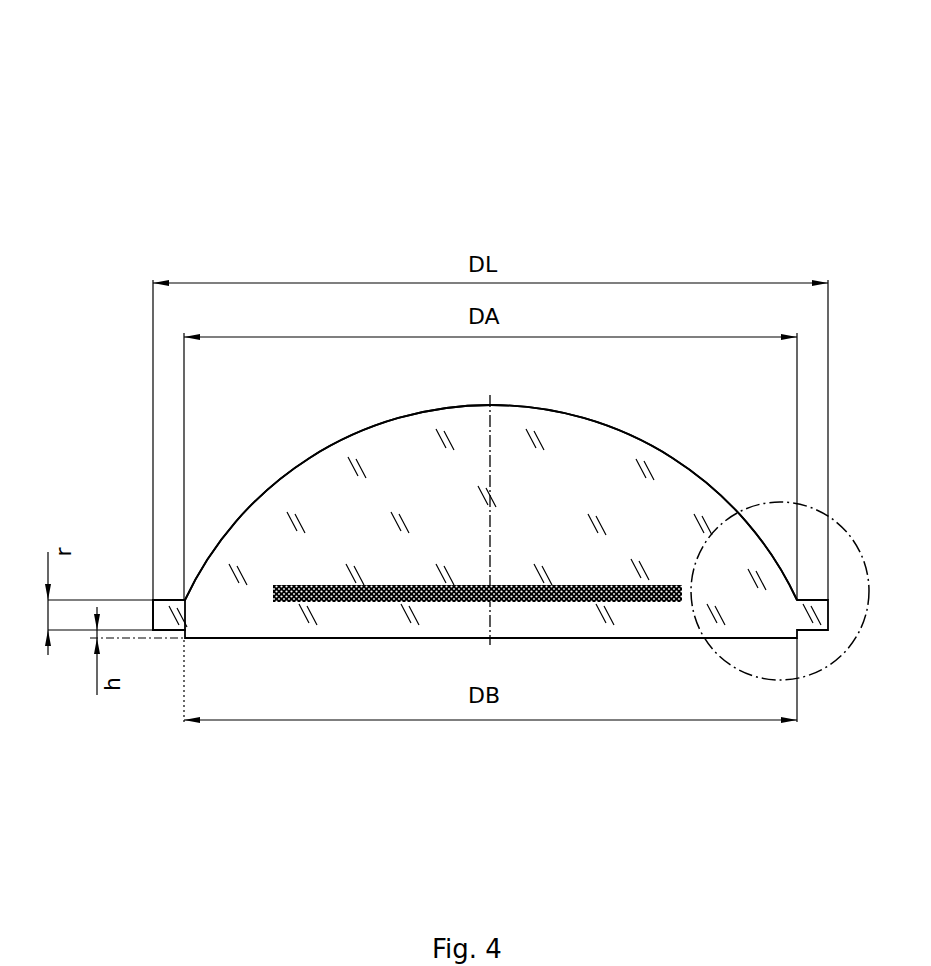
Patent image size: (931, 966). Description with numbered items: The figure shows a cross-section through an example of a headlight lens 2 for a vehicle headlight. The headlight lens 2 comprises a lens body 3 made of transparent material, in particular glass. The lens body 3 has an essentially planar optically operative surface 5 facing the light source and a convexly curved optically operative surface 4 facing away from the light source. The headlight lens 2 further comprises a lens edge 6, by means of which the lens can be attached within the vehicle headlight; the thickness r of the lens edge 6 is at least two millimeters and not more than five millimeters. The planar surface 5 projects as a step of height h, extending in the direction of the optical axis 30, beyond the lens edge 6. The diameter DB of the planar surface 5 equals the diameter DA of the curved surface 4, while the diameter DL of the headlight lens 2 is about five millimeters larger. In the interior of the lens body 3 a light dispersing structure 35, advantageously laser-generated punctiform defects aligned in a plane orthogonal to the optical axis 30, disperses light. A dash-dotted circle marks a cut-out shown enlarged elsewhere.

The headlight lens 2 is at (731, 150).
The lens body 3 is at (262, 553).
The convexly curved optically operative surface 4 is at (297, 467).
The optical axis 30 is at (490, 535).
The lens edge 6 is at (172, 613).
The essentially planar optically operative surface 5 is at (303, 638).
The light dispersing structure 35 is at (609, 592).